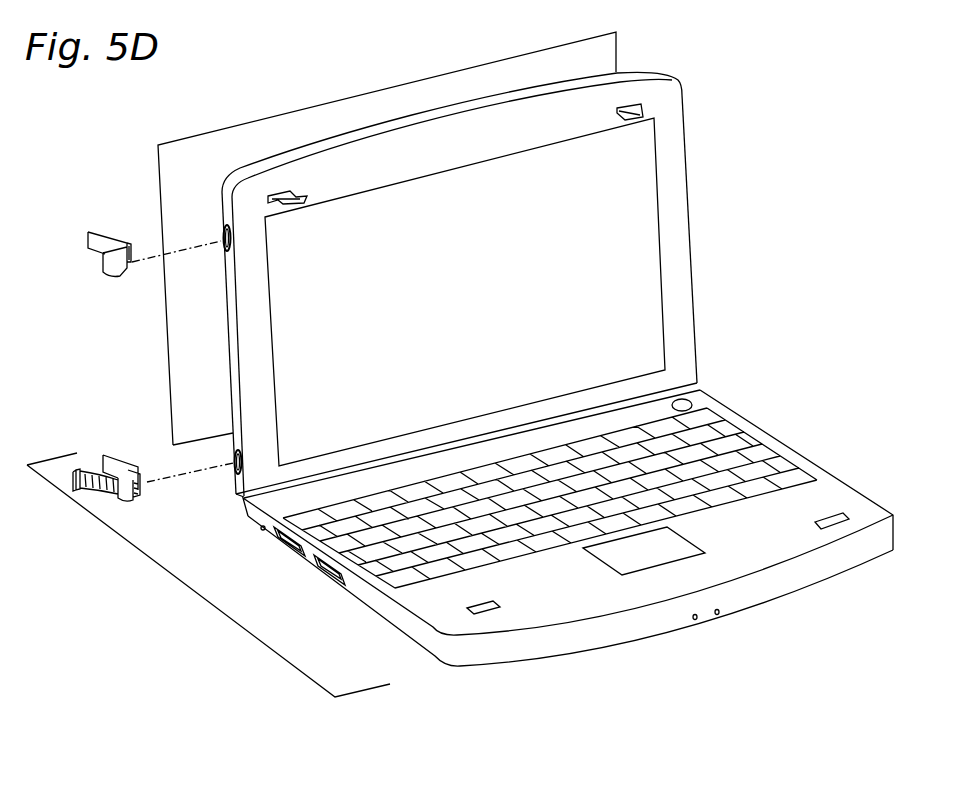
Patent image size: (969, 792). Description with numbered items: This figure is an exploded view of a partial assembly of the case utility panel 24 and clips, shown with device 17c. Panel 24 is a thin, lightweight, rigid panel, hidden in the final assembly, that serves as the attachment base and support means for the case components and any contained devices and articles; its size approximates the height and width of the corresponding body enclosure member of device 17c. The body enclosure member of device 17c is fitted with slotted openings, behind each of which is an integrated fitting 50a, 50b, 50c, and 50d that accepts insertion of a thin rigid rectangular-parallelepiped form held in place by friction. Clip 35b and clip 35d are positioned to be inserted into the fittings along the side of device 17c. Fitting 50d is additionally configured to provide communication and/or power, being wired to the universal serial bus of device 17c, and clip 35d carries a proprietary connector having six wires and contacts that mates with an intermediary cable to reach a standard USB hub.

The case utility panel 24 is at (393, 80).
The integrated fitting 50a is at (695, 100).
The integrated fitting 50b is at (213, 222).
The integrated fitting 50c is at (713, 338).
The integrated fitting 50d is at (230, 475).
The device 17c is at (700, 228).
The clip 35b is at (93, 222).
The clip 35d is at (95, 443).